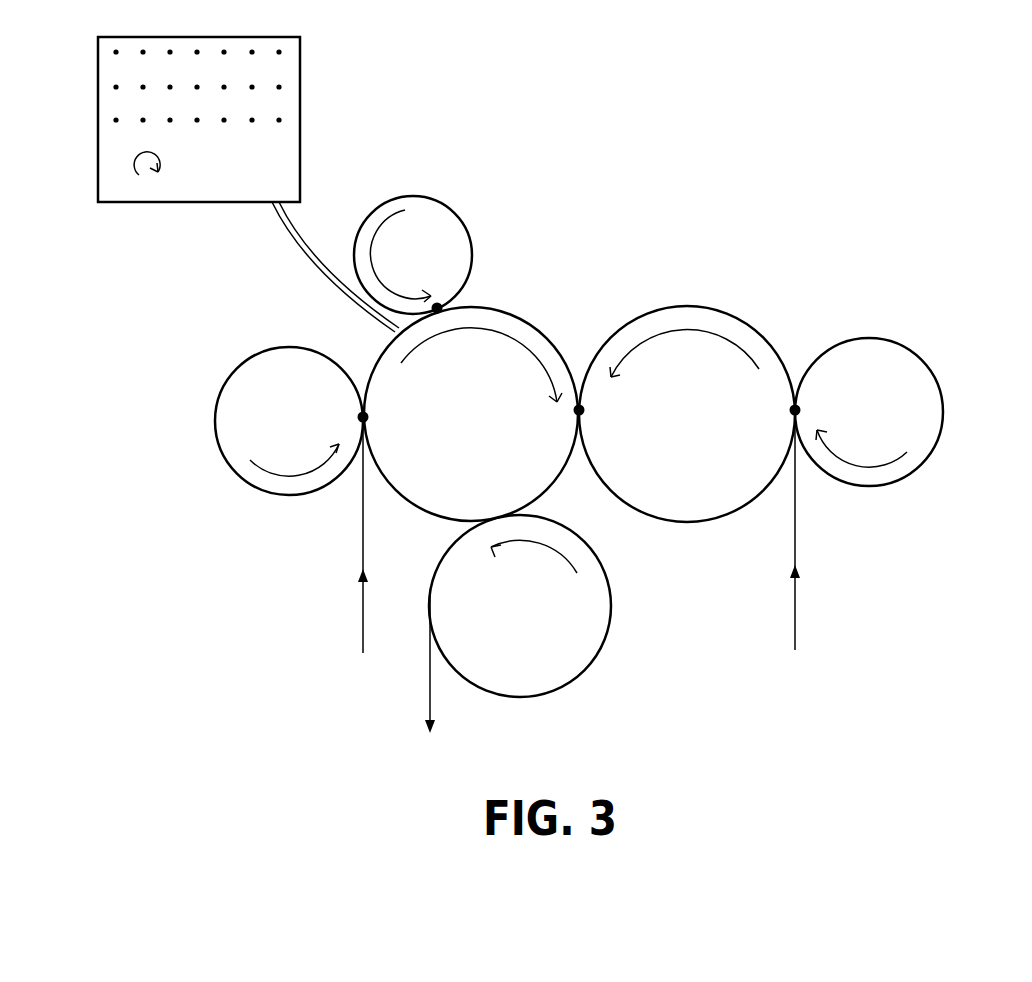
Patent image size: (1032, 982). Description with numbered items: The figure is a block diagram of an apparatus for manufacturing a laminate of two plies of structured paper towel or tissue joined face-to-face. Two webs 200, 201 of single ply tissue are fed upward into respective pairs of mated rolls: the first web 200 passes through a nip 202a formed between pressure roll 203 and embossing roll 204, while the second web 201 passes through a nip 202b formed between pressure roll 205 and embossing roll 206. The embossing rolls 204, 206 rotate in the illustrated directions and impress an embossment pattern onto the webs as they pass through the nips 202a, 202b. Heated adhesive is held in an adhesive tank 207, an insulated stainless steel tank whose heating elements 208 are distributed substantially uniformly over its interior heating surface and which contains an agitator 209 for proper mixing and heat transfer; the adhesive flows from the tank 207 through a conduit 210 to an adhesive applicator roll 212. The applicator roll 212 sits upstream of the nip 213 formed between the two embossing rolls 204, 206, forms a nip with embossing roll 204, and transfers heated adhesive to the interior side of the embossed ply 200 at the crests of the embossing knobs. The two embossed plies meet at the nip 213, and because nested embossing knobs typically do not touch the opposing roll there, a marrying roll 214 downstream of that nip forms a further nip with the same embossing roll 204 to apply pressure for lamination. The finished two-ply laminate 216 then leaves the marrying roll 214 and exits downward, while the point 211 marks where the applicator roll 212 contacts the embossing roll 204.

The first web 200 is at (358, 543).
The second web 201 is at (795, 533).
The nip 202a is at (373, 413).
The nip 202b is at (795, 370).
The pressure roll 203 is at (230, 413).
The embossing roll 204 is at (385, 372).
The pressure roll 205 is at (922, 412).
The embossing roll 206 is at (705, 325).
The adhesive tank 207 is at (283, 155).
The heating elements 208 is at (288, 84).
The agitator 209 is at (142, 202).
The conduit 210 is at (287, 222).
The nip 211 is at (455, 298).
The adhesive applicator roll 212 is at (447, 232).
The nip 213 is at (580, 397).
The marrying roll 214 is at (595, 592).
The outgoing web 216 is at (427, 695).